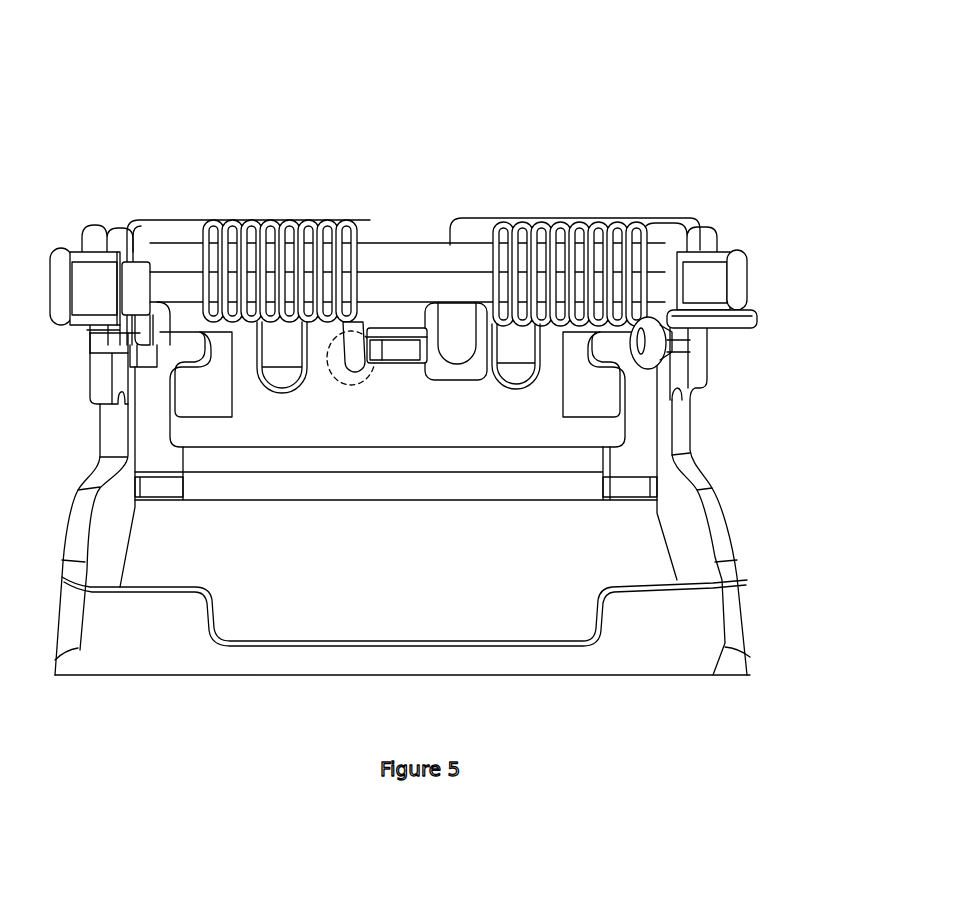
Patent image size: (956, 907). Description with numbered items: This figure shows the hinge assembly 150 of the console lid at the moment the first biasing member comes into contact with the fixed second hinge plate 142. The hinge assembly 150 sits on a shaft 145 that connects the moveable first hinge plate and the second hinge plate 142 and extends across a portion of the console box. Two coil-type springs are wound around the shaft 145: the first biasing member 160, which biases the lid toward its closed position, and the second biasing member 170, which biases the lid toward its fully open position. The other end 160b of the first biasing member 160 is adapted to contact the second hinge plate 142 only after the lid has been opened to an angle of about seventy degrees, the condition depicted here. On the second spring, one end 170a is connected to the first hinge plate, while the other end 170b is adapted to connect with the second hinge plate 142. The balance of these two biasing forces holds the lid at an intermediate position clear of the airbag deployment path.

The hinge assembly 150 is at (556, 147).
The shaft 145 is at (410, 243).
The first biasing member 160 is at (279, 220).
The other end of the first biasing member 160b is at (347, 320).
The second biasing member 170 is at (585, 222).
The one end of the second biasing member 170a is at (757, 323).
The other end of the second biasing member 170b is at (440, 317).
The second hinge plate 142 is at (392, 365).